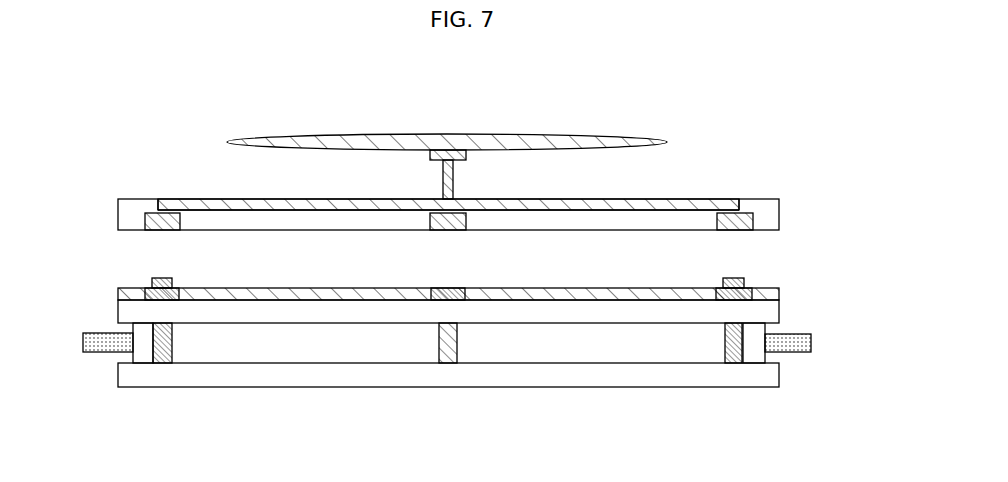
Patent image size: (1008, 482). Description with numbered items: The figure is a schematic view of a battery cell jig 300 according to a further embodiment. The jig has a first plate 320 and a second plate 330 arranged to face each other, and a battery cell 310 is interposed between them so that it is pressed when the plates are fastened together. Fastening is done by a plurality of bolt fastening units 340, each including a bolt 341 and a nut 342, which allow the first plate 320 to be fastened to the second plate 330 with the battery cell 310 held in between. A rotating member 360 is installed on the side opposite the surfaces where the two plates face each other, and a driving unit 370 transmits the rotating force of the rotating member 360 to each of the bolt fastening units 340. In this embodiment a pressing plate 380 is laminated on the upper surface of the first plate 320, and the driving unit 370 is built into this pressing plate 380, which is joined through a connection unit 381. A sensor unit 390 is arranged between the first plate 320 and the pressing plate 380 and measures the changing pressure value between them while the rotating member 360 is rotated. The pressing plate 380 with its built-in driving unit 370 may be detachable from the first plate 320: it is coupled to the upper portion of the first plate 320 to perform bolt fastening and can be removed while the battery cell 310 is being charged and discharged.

The battery cell jig 300 is at (138, 93).
The battery cell 310 is at (755, 355).
The first plate 320 is at (770, 310).
The second plate 330 is at (780, 378).
The bolt fastening unit 340 is at (162, 445).
The bolt 341 is at (155, 352).
The nut 342 is at (152, 288).
The rotating member 360 is at (652, 134).
The driving unit 370 is at (175, 199).
The pressing plate 380 is at (455, 189).
The connection unit 381 is at (160, 226).
The sensor unit 390 is at (765, 295).